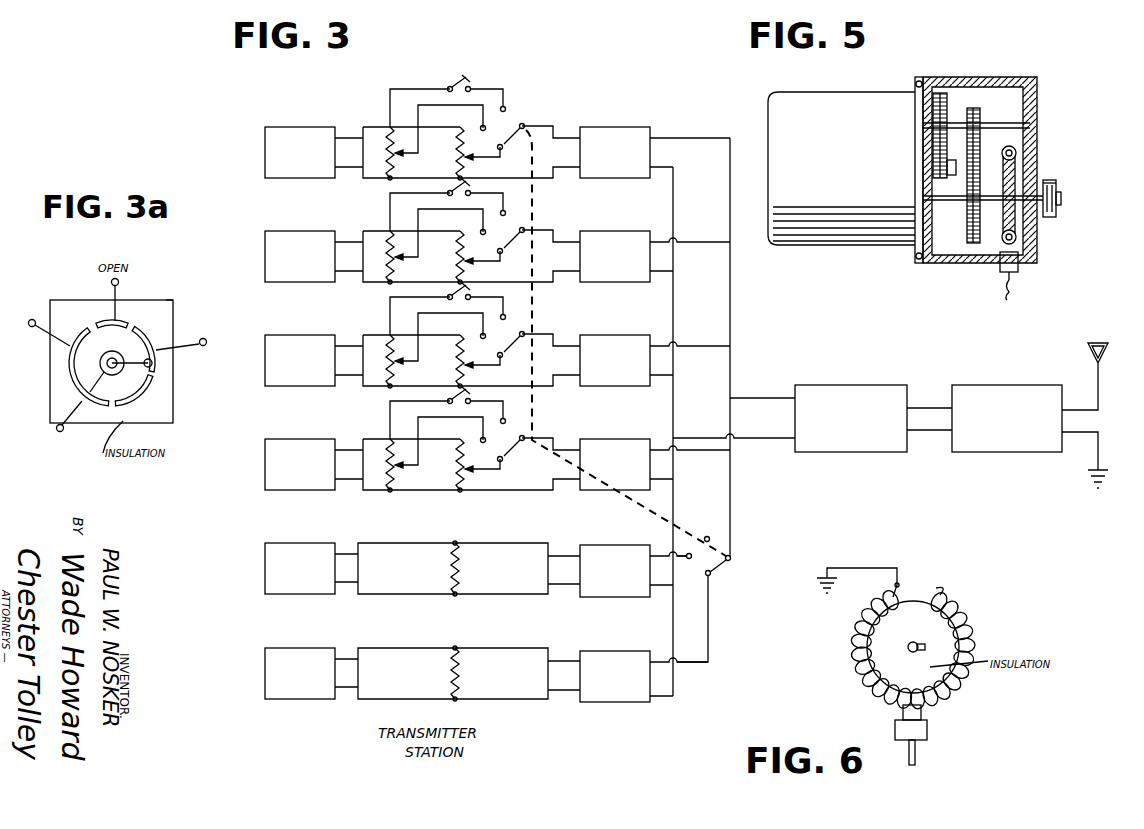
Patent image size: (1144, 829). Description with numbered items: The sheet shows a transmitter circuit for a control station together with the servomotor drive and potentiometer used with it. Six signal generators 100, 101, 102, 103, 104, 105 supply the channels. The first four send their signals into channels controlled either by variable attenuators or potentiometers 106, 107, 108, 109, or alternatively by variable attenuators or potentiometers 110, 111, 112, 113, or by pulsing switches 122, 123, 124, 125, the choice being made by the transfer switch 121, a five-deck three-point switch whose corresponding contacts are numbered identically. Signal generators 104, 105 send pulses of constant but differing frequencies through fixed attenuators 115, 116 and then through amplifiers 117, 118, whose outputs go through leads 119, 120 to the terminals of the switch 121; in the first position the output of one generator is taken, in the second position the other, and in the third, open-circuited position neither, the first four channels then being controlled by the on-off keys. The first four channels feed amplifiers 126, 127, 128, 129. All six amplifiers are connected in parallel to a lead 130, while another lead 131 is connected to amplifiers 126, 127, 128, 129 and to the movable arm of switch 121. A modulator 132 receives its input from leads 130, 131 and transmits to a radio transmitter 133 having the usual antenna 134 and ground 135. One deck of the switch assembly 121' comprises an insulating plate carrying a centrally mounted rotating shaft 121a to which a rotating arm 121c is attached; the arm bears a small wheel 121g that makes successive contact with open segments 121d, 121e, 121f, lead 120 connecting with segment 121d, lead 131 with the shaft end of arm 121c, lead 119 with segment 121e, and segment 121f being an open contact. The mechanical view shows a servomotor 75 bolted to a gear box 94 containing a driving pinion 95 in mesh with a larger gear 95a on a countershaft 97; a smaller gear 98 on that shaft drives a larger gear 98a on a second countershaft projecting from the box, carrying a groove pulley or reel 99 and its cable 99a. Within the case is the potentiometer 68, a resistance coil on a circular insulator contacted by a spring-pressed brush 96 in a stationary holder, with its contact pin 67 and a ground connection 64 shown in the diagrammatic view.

In FIG. 3, the signal generator 100 is at (265, 154).
In FIG. 3, the signal generator 101 is at (265, 243).
In FIG. 3, the signal generator 102 is at (265, 363).
In FIG. 3, the signal generator 103 is at (265, 466).
In FIG. 3, the signal generator 104 is at (265, 573).
In FIG. 3, the signal generator 105 is at (265, 678).
In FIG. 3, the variable attenuator or potentiometer 106 is at (463, 171).
In FIG. 3, the variable attenuator or potentiometer 107 is at (463, 275).
In FIG. 3, the variable attenuator or potentiometer 108 is at (463, 379).
In FIG. 3, the variable attenuator or potentiometer 109 is at (463, 483).
In FIG. 3, the variable attenuator or potentiometer 110 is at (393, 171).
In FIG. 3, the variable attenuator or potentiometer 111 is at (393, 275).
In FIG. 3, the variable attenuator or potentiometer 112 is at (393, 379).
In FIG. 3, the variable attenuator or potentiometer 113 is at (393, 483).
In FIG. 3, the fixed attenuator 115 is at (459, 573).
In FIG. 3, the fixed attenuator 116 is at (461, 678).
In FIG. 3, the amplifier 117 is at (617, 555).
In FIG. 3, the amplifier 118 is at (620, 656).
In FIG. 3, the lead 119 is at (709, 642).
In FIG. 3a, the lead 119 is at (40, 309).
In FIG. 3, the lead 120 is at (656, 553).
In FIG. 3a, the lead 120 is at (203, 339).
In FIG. 3, the three-point transfer switch 121 is at (623, 344).
In FIG. 3a, the switch assembly 121' is at (192, 282).
In FIG. 3a, the shaft 121a is at (111, 352).
In FIG. 3a, the rotating arm 121c is at (145, 368).
In FIG. 3a, the open segment 121d is at (126, 405).
In FIG. 3a, the open segment 121e is at (72, 387).
In FIG. 3a, the open segment 121f is at (101, 321).
In FIG. 3a, the small wheel 121g is at (142, 331).
In FIG. 3, the pulsing switch 122 is at (460, 80).
In FIG. 3, the pulsing switch 123 is at (455, 190).
In FIG. 3, the pulsing switch 124 is at (452, 294).
In FIG. 3, the pulsing switch 125 is at (452, 398).
In FIG. 3, the amplifier 126 is at (636, 134).
In FIG. 3, the amplifier 127 is at (624, 237).
In FIG. 3, the amplifier 128 is at (621, 341).
In FIG. 3, the amplifier 129 is at (618, 444).
In FIG. 3, the lead 130 is at (673, 325).
In FIG. 3, the lead 131 is at (731, 325).
In FIG. 3a, the lead 131 is at (65, 431).
In FIG. 3, the modulator 132 is at (840, 448).
In FIG. 3, the radio transmitter 133 is at (993, 448).
In FIG. 3, the antenna 134 is at (1098, 376).
In FIG. 3, the ground 135 is at (1098, 454).
In FIG. 6, the ground connection 64 is at (878, 568).
In FIG. 5, the contact pin 67 is at (1011, 291).
In FIG. 6, the contact pin 67 is at (916, 761).
In FIG. 5, the potentiometer 68 is at (1017, 237).
In FIG. 6, the potentiometer 68 is at (980, 604).
In FIG. 5, the servomotor 75 is at (838, 242).
In FIG. 5, the gear box 94 is at (1037, 108).
In FIG. 5, the driving pinion 95 is at (951, 166).
In FIG. 5, the gear 95a is at (945, 95).
In FIG. 5, the spring-pressed brush 96 is at (1000, 266).
In FIG. 6, the spring-pressed brush 96 is at (928, 732).
In FIG. 5, the countershaft 97 is at (992, 124).
In FIG. 5, the gear 98 is at (979, 106).
In FIG. 5, the gear 98a is at (967, 226).
In FIG. 5, the groove pulley or reel 99 is at (1062, 190).
In FIG. 5, the cable 99a is at (1050, 184).